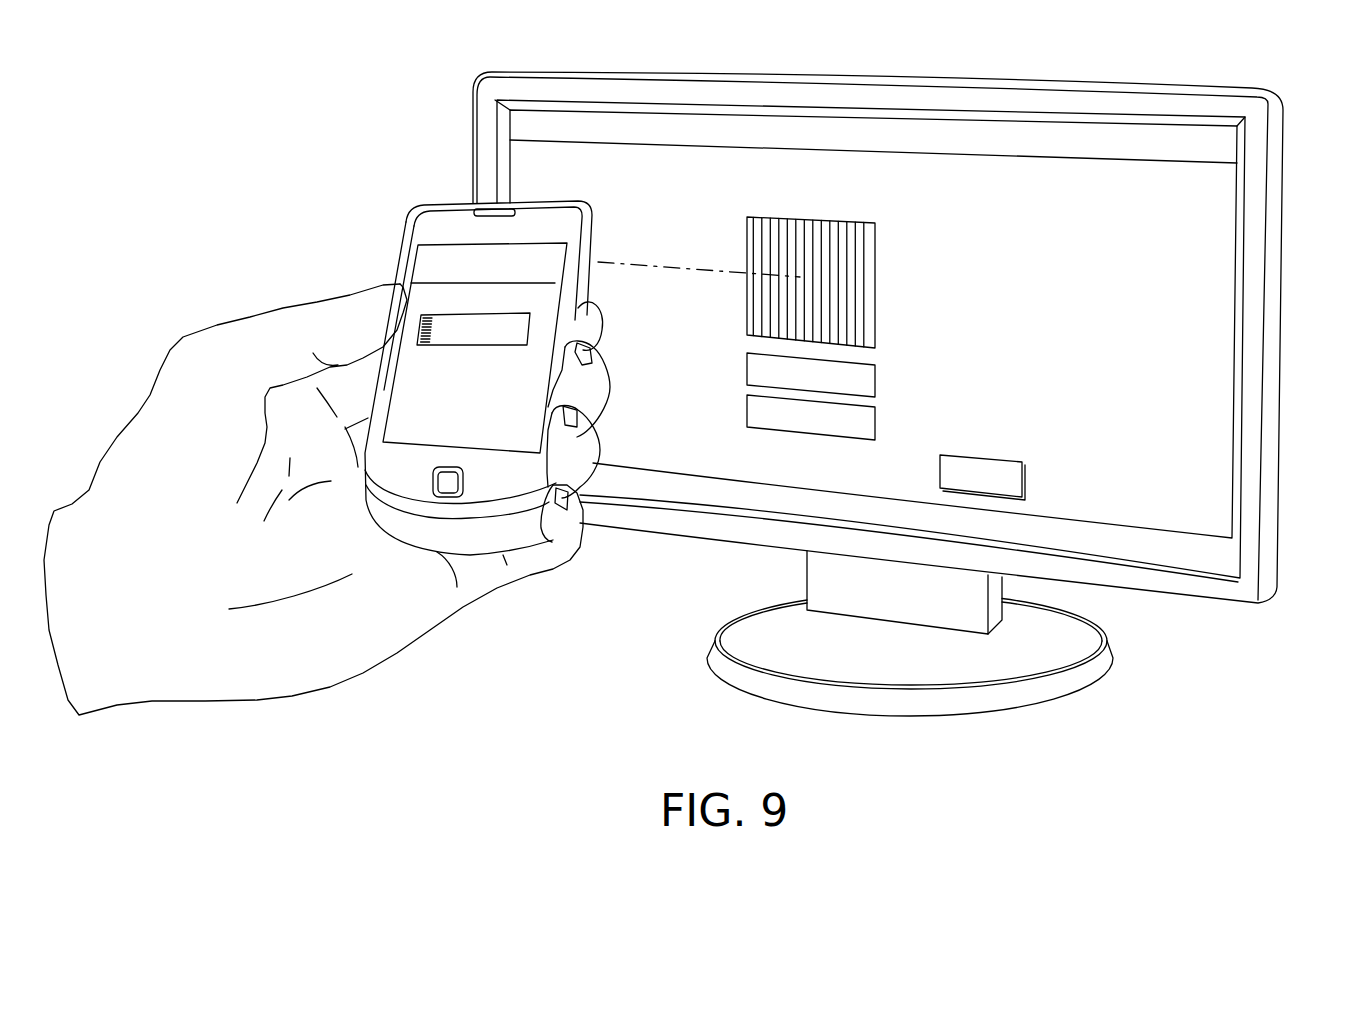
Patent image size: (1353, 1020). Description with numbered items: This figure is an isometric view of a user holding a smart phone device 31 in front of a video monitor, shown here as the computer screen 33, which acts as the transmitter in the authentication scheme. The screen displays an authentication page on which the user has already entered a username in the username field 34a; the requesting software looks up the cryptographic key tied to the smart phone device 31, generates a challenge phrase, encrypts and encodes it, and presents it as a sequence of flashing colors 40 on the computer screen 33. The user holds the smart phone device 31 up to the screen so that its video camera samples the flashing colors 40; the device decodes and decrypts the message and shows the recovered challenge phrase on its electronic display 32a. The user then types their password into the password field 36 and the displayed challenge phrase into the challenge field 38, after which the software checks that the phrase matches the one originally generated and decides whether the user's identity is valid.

The smart phone device 31 is at (438, 223).
The electronic display 32a is at (457, 315).
The computer screen 33 is at (1207, 386).
The username field 34a is at (802, 195).
The password field 36 is at (868, 387).
The challenge field 38 is at (868, 427).
The sequence of flashing colors 40 is at (865, 253).
The monitor M is at (1048, 98).